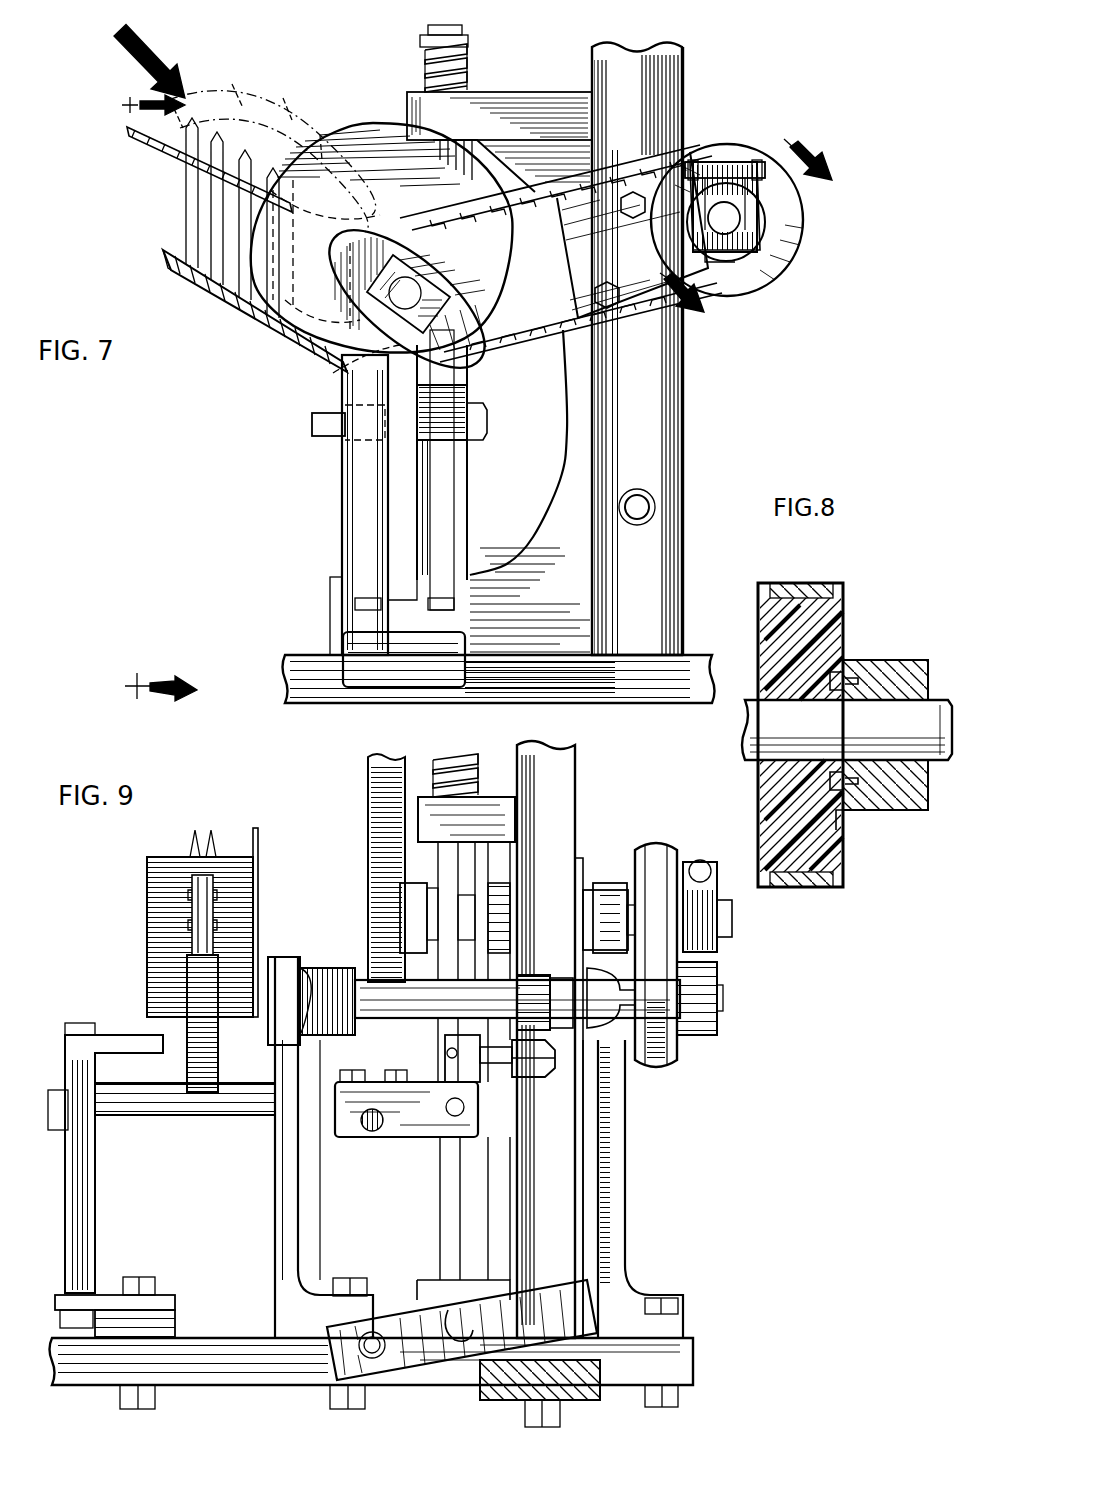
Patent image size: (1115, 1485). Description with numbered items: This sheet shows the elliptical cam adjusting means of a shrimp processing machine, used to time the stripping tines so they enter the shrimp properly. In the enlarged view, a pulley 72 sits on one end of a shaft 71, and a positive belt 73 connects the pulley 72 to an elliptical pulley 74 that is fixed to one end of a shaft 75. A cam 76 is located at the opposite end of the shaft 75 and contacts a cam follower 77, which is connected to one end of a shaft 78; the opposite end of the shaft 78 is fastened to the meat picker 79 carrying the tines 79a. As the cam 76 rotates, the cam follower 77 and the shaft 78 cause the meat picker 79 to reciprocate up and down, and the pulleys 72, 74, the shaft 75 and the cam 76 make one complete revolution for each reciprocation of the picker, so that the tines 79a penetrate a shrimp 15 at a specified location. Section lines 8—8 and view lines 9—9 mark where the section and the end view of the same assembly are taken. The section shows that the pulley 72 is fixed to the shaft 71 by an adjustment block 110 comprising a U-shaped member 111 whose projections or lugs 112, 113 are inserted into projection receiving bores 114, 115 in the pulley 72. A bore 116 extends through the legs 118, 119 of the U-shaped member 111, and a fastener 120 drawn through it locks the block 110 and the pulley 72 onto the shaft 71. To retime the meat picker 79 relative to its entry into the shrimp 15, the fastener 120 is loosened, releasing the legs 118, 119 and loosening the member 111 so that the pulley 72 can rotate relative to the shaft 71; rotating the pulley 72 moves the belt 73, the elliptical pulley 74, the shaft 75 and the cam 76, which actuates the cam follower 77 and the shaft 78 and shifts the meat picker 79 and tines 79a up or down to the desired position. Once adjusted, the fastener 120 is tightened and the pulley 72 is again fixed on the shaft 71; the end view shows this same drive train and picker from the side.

In FIG. 7, the section line 8 is at (751, 240).
In FIG. 7, the view line 9 is at (151, 406).
In FIG. 7, the shrimp 15 is at (228, 84).
In FIG. 7, the shaft 71 is at (757, 243).
In FIG. 8, the shaft 71 is at (753, 715).
In FIG. 9, the shaft 71 is at (733, 913).
In FIG. 7, the pulley 72 is at (790, 228).
In FIG. 8, the pulley 72 is at (843, 583).
In FIG. 9, the pulley 72 is at (702, 862).
In FIG. 7, the positive belt 73 is at (533, 367).
In FIG. 8, the positive belt 73 is at (795, 583).
In FIG. 9, the positive belt 73 is at (653, 841).
In FIG. 7, the elliptical pulley 74 is at (272, 320).
In FIG. 9, the elliptical pulley 74 is at (680, 1050).
In FIG. 7, the shaft 75 is at (410, 287).
In FIG. 9, the shaft 75 is at (718, 998).
In FIG. 7, the cam 76 is at (338, 140).
In FIG. 9, the cam 76 is at (533, 857).
In FIG. 7, the cam follower 77 is at (332, 373).
In FIG. 9, the cam follower 77 is at (547, 1077).
In FIG. 9, the shaft 78 is at (498, 1093).
In FIG. 7, the meat picker 79 is at (168, 265).
In FIG. 9, the meat picker 79 is at (187, 1045).
In FIG. 7, the tines 79a is at (192, 218).
In FIG. 9, the tines 79a is at (190, 880).
In FIG. 7, the adjustment block 110 is at (777, 270).
In FIG. 8, the adjustment block 110 is at (917, 658).
In FIG. 7, the U-shaped member 111 is at (724, 160).
In FIG. 7, the projection or lug 112 is at (790, 202).
In FIG. 8, the projection or lug 112 is at (865, 660).
In FIG. 7, the projection or lug 113 is at (733, 282).
In FIG. 8, the projection or lug 113 is at (860, 780).
In FIG. 8, the projection receiving bore 114 is at (847, 667).
In FIG. 8, the projection receiving bore 115 is at (843, 823).
In FIG. 7, the bore 116 is at (697, 160).
In FIG. 7, the leg 118 is at (670, 222).
In FIG. 7, the leg 119 is at (757, 180).
In FIG. 7, the fastener 120 is at (760, 190).